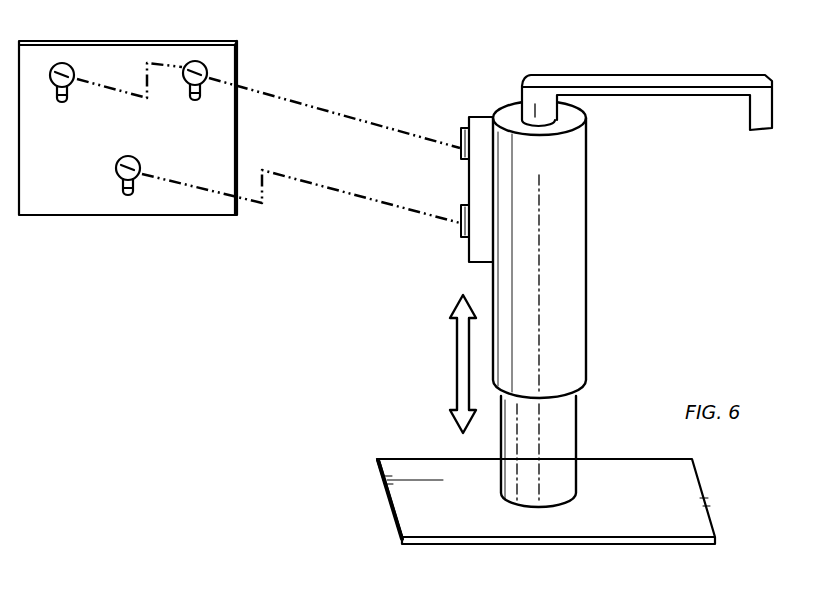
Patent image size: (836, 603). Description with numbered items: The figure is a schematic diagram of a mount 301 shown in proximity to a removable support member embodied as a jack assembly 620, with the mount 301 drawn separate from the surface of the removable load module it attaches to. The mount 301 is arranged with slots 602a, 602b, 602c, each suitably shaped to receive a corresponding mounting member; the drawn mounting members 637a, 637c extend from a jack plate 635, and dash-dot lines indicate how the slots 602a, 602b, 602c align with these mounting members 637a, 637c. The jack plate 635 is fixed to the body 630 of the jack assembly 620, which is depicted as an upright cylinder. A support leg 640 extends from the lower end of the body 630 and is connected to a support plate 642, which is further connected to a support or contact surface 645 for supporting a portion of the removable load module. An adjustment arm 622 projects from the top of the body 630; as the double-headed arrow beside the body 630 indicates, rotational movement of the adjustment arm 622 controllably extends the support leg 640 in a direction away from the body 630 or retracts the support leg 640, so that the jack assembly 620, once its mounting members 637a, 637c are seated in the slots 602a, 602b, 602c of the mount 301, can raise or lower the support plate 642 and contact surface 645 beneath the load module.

The mount 301 is at (237, 62).
The slot 602a is at (72, 65).
The slot 602b is at (184, 82).
The slot 602c is at (118, 161).
The jack assembly 620 is at (706, 183).
The adjustment arm 622 is at (632, 75).
The body 630 is at (586, 283).
The jack plate 635 is at (470, 117).
The mounting member 637a is at (461, 155).
The mounting member 637c is at (461, 232).
The support leg 640 is at (576, 427).
The support plate 642 is at (683, 483).
The contact surface 645 is at (391, 507).